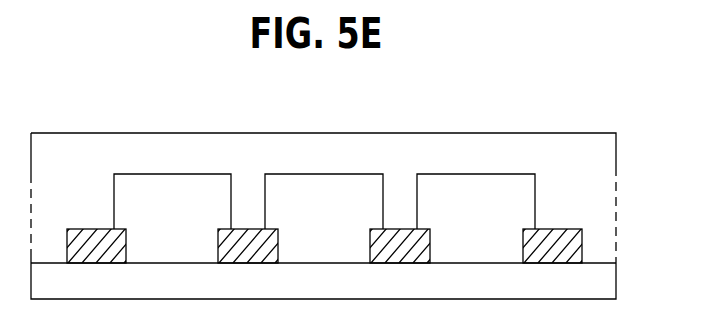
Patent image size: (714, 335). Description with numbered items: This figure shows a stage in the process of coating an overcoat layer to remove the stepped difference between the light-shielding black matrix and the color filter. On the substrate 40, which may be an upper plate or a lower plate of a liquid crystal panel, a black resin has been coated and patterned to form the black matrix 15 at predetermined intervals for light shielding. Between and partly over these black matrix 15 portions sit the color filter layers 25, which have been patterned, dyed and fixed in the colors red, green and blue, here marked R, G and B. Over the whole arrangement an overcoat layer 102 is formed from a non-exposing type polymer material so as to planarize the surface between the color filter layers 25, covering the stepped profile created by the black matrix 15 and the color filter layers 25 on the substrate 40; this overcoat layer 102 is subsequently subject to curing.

The overcoat layer 102 is at (502, 146).
The color filter layer 25 is at (526, 194).
The black matrix 15 is at (577, 247).
The substrate 40 is at (611, 283).